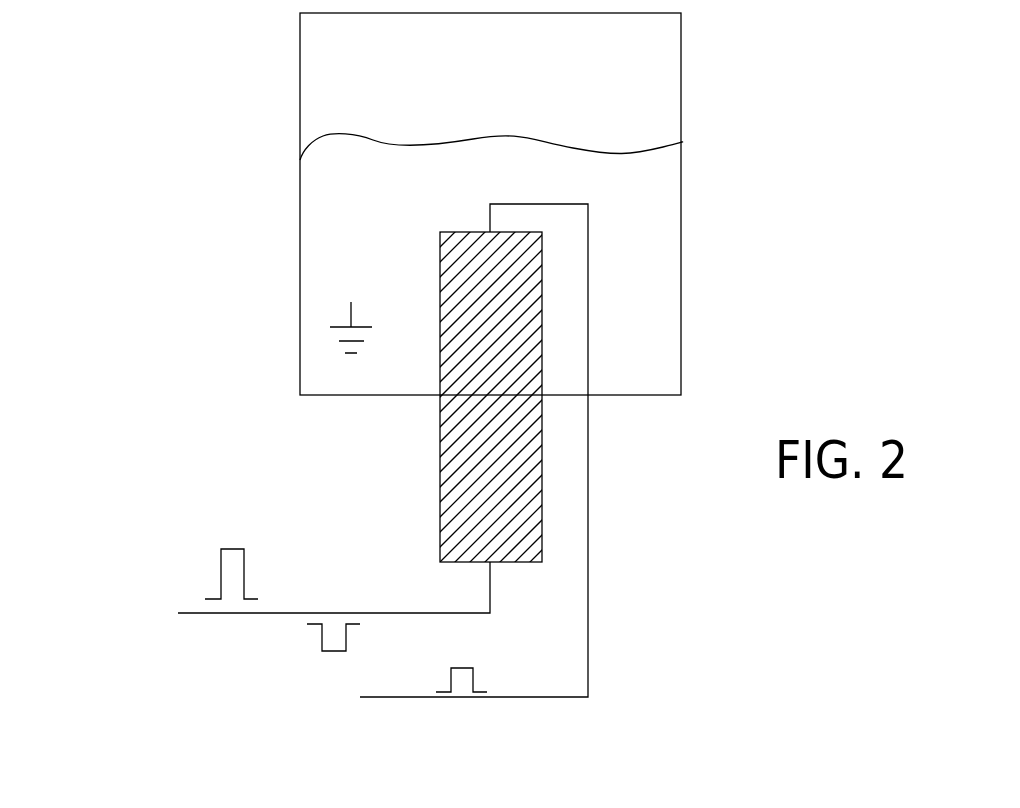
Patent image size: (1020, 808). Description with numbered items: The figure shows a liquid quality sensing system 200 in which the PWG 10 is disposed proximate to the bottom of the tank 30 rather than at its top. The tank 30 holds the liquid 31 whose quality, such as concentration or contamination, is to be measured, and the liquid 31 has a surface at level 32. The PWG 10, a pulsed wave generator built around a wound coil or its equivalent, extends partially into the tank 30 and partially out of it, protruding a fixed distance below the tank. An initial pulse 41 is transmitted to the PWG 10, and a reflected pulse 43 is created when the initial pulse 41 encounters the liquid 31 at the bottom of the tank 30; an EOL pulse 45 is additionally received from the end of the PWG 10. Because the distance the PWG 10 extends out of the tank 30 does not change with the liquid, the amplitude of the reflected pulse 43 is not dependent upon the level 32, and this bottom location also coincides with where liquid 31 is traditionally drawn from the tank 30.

The system 200 is at (190, 50).
The tank 30 is at (688, 78).
The level 32 is at (656, 163).
The liquid 31 is at (654, 356).
The PWG 10 is at (462, 438).
The initial pulse 41 is at (196, 580).
The reflected pulse 43 is at (294, 643).
The EOL pulse 45 is at (421, 660).